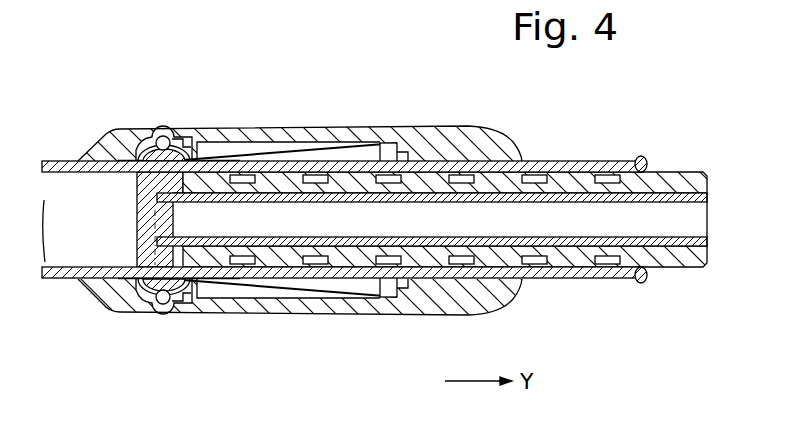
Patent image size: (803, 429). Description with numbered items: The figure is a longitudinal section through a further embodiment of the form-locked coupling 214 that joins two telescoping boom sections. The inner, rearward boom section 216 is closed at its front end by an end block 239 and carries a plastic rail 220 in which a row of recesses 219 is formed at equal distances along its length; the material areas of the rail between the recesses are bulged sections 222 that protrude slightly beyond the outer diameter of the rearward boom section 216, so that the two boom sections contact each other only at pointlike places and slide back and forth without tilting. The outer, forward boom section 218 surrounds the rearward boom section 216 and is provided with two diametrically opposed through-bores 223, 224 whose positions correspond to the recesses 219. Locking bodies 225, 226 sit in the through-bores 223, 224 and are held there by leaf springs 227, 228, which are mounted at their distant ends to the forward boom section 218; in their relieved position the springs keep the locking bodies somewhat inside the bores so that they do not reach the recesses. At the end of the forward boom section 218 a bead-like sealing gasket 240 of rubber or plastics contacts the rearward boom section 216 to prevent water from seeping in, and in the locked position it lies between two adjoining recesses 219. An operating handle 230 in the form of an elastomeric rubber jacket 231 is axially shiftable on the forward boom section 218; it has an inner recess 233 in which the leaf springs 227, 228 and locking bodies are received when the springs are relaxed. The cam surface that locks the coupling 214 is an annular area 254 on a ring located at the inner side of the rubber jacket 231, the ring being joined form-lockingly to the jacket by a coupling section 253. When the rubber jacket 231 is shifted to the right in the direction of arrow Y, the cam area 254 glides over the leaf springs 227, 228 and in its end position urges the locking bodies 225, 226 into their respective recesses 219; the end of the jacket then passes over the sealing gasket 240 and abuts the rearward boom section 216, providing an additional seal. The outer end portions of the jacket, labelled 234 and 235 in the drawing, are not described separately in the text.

The form-locked coupling 214 is at (158, 137).
The rearward boom section 216 is at (703, 240).
The forward boom section 218 is at (53, 160).
The recesses 219 is at (533, 180).
The rail 220 is at (665, 172).
The bulged sections 222 is at (573, 183).
The through-bore 223 is at (406, 280).
The through-bore 224 is at (405, 150).
The locking body 225 is at (387, 287).
The locking body 226 is at (388, 150).
The leaf spring 227 is at (262, 290).
The leaf spring 228 is at (237, 155).
The operating handle 230 is at (112, 306).
The rubber jacket 231 is at (182, 310).
The inner recess 233 is at (287, 147).
The cap nose 234 is at (497, 145).
The cap nose 235 is at (493, 298).
The end block 239 is at (137, 224).
The sealing gasket 240 is at (643, 156).
The coupling section 253 is at (147, 143).
The annular area 254 is at (185, 143).